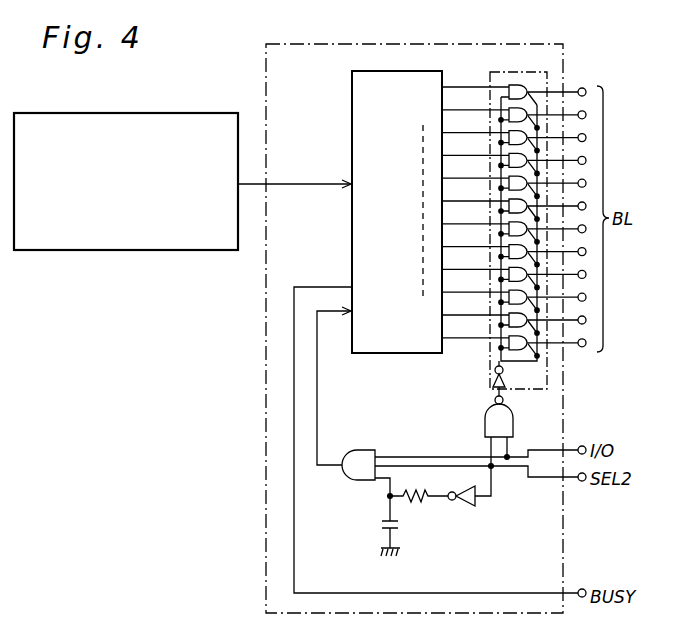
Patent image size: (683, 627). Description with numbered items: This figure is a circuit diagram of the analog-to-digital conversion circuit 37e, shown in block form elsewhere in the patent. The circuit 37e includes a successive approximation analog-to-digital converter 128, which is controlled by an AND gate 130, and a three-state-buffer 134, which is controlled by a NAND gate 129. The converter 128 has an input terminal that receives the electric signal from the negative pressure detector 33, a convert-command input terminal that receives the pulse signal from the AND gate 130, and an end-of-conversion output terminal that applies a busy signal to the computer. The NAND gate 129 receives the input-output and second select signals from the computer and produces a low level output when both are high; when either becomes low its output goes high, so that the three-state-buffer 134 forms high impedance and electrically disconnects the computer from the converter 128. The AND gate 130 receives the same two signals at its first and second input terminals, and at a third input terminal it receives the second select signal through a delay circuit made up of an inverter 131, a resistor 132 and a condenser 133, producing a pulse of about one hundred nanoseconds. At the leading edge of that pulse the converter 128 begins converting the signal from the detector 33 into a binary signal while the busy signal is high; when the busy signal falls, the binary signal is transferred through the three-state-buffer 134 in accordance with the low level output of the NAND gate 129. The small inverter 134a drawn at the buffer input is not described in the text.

The negative pressure detector 33 is at (176, 254).
The analog-to-digital conversion circuit 37e is at (262, 392).
The successive approximation analog-to-digital converter 128 is at (388, 128).
The NAND gate 129 is at (485, 428).
The AND gate 130 is at (358, 480).
The inverter 131 is at (468, 506).
The resistor 132 is at (409, 499).
The condenser 133 is at (381, 525).
The three-state-buffer 134 is at (488, 352).
The inverter 134a is at (495, 401).